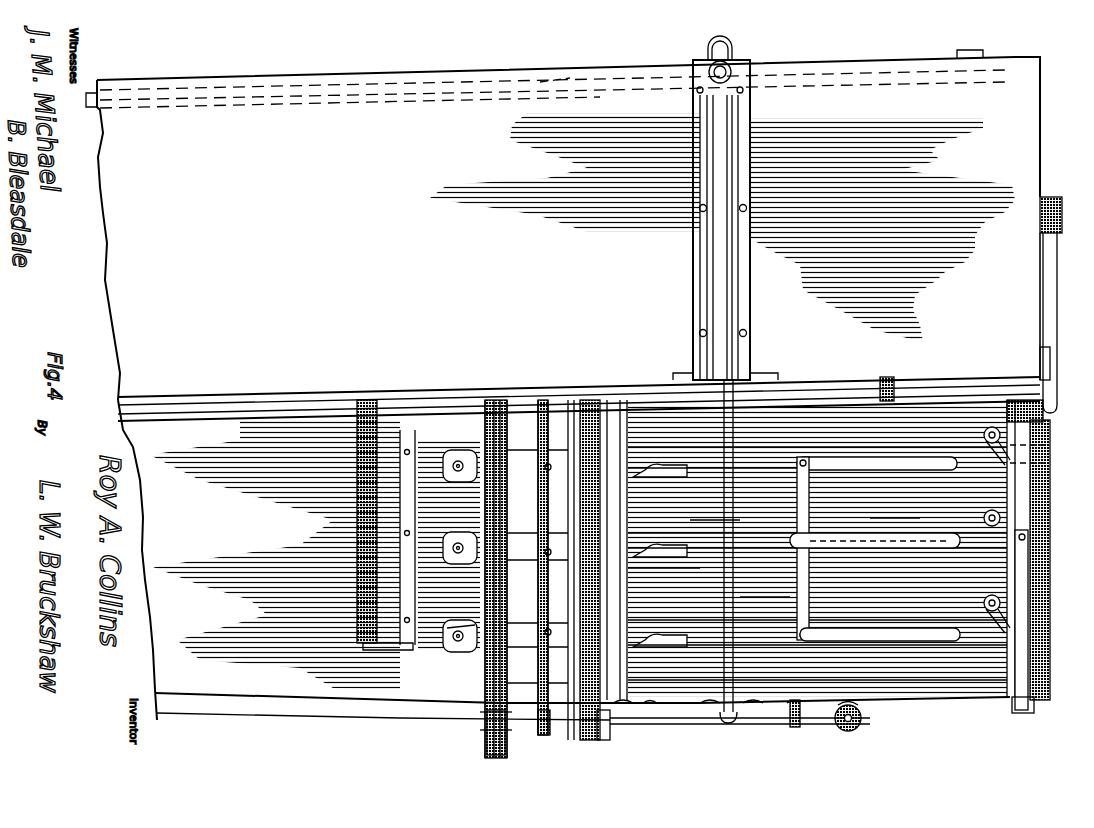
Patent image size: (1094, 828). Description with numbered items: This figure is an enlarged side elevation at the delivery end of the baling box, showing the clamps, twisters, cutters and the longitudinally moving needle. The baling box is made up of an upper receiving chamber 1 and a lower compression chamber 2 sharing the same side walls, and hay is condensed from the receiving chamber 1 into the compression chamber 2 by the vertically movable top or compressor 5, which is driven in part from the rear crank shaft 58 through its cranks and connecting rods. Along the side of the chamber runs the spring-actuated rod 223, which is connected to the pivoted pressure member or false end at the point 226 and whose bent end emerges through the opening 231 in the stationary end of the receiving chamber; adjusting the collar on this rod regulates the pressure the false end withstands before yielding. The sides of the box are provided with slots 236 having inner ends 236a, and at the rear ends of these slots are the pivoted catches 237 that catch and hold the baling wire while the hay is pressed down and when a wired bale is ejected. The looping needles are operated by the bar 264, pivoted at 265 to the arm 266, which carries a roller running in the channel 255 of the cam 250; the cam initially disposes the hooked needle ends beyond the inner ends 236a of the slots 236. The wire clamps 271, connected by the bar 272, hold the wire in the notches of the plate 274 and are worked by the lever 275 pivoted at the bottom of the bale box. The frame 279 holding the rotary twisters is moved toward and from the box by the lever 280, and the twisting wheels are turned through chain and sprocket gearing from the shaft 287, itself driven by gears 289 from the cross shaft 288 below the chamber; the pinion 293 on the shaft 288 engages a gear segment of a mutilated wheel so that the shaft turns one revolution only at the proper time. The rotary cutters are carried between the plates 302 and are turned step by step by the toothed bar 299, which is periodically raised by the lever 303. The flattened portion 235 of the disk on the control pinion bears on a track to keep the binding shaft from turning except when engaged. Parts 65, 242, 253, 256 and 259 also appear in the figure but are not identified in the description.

The receiving chamber 1 is at (402, 218).
The compression chamber 2 is at (581, 560).
The compressor 5 is at (556, 78).
The rear crank shaft 58 is at (716, 723).
The transverse rail 65 is at (945, 378).
The rod 223 is at (1055, 290).
The connection point 226 is at (1052, 197).
The opening 231 is at (457, 622).
The flattened portion 235 is at (891, 508).
The slots 236 is at (952, 641).
The inner ends of slots 236a is at (450, 450).
The pivoted catches 237 is at (985, 468).
The latch 242 is at (1040, 360).
The cam 250 is at (1040, 112).
The top lug 253 is at (970, 50).
The channel 255 is at (711, 510).
The upper arm bar 256 is at (860, 458).
The middle pivot plate 259 is at (448, 530).
The bar 264 is at (950, 548).
The pivot 265 is at (1028, 537).
The arm 266 is at (1048, 603).
The wire clamps 271 is at (664, 576).
The bar 272 is at (547, 498).
The plate 274 is at (538, 400).
The lever 275 is at (490, 760).
The twister frame 279 is at (600, 398).
The lever 280 is at (580, 735).
The shaft 287 is at (752, 723).
The cross shaft 288 is at (866, 716).
The gears 289 is at (858, 730).
The pinion 293 is at (764, 587).
The bar 299 is at (485, 716).
The plates 302 is at (480, 668).
The lever 303 is at (485, 732).